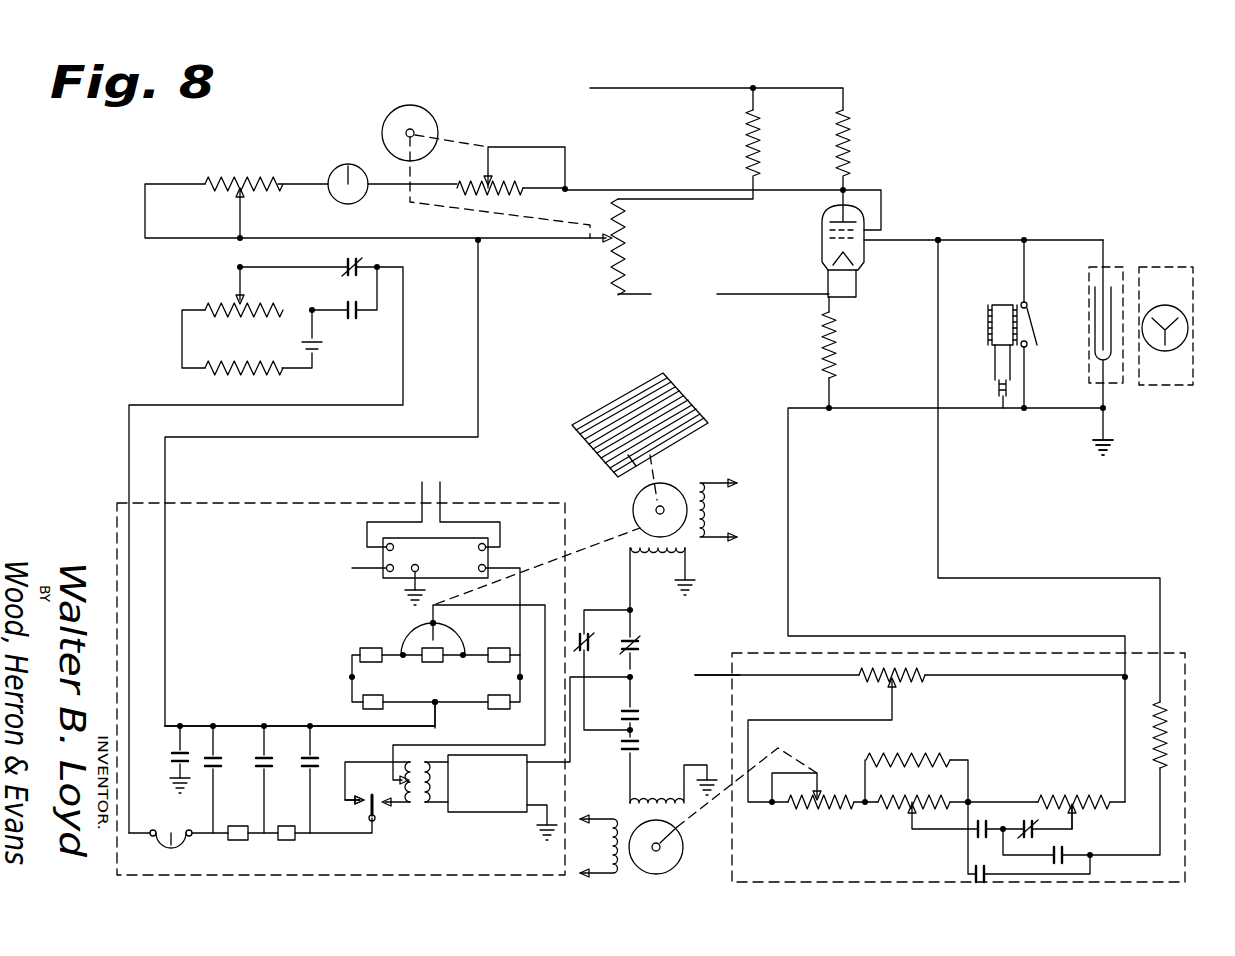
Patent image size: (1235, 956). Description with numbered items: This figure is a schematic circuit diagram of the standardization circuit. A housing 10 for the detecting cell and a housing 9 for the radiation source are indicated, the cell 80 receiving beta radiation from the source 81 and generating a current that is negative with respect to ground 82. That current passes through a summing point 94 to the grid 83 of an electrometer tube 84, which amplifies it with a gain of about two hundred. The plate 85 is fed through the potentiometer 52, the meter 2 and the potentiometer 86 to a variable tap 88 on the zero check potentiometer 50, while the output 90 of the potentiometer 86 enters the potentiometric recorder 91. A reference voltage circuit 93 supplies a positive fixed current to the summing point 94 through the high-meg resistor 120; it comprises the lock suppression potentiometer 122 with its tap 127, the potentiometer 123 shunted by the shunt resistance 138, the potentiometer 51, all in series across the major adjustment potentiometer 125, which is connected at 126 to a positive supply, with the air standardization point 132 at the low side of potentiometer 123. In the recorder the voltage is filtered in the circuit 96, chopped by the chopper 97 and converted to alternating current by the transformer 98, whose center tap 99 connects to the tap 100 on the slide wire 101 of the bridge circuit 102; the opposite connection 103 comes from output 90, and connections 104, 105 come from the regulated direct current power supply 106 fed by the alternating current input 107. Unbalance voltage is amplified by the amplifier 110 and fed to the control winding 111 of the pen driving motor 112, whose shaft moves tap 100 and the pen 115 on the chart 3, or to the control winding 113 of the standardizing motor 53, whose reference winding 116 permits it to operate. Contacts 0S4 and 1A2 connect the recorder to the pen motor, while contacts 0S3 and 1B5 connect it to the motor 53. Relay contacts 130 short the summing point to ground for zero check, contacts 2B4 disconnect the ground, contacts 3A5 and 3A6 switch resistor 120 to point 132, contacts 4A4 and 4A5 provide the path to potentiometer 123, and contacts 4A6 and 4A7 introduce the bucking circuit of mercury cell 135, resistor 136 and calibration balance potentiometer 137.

The meter 2 is at (346, 170).
The recording chart 3 is at (648, 382).
The housing for a radiation source 9 is at (1176, 262).
The housing for the detecting cell 10 is at (1116, 264).
The zero check potentiometer 50 is at (628, 246).
The potentiometer 51 is at (818, 812).
The potentiometer 52 is at (503, 184).
The standardizing motor 53 is at (425, 118).
The cell 80 is at (1096, 358).
The source 81 is at (1170, 348).
The ground 82 is at (1112, 450).
The grid 83 is at (848, 242).
The electrometer tube 84 is at (872, 216).
The plate 85 is at (867, 190).
The potentiometer 86 is at (243, 180).
The variable tap 88 is at (606, 252).
The output 90 is at (240, 218).
The potentiometric recorder 91 is at (113, 503).
The reference voltage circuit 93 is at (1182, 650).
The summing point 94 is at (945, 238).
The filter circuit 96 is at (245, 722).
The chopper 97 is at (358, 805).
The transformer 98 is at (420, 805).
The center tap 99 is at (402, 818).
The tap 100 is at (428, 620).
The slide wire 101 is at (452, 636).
The bridge circuit 102 is at (356, 696).
The connection 103 is at (437, 710).
The connection 104 is at (358, 677).
The connection 105 is at (518, 678).
The regulated direct current voltage power supply 106 is at (405, 550).
The alternating current input 107 is at (432, 482).
The amplifier 110 is at (505, 812).
The control winding 111 is at (662, 560).
The pen driving motor 112 is at (668, 495).
The control winding 113 is at (650, 796).
The pen 115 is at (613, 466).
The reference winding 116 is at (610, 850).
The high-meg resistor 120 is at (1152, 736).
The lock suppression potentiometer 122 is at (1068, 798).
The potentiometer 123 is at (900, 812).
The major adjustment potentiometer 125 is at (918, 682).
The connection to positive direct current voltage supply 126 is at (805, 675).
The tap 127 is at (1078, 822).
The relay contacts 130 is at (1032, 316).
The air standardization point 132 is at (971, 800).
The mercury cell 135 is at (322, 345).
The resistor 136 is at (268, 376).
The calibration balance potentiometer 137 is at (212, 305).
The shunt resistance 138 is at (952, 754).
The contacts 1A2 is at (588, 628).
The contacts 1B5 is at (622, 750).
The contacts 0S3 is at (640, 715).
The contacts 0S4 is at (640, 647).
The contacts 2B4 is at (1000, 404).
The contacts 3A5 is at (1070, 858).
The contacts 3A6 is at (965, 873).
The contacts 4A4 is at (1020, 820).
The contacts 4A5 is at (975, 838).
The contacts 4A6 is at (360, 265).
The contacts 4A7 is at (358, 316).